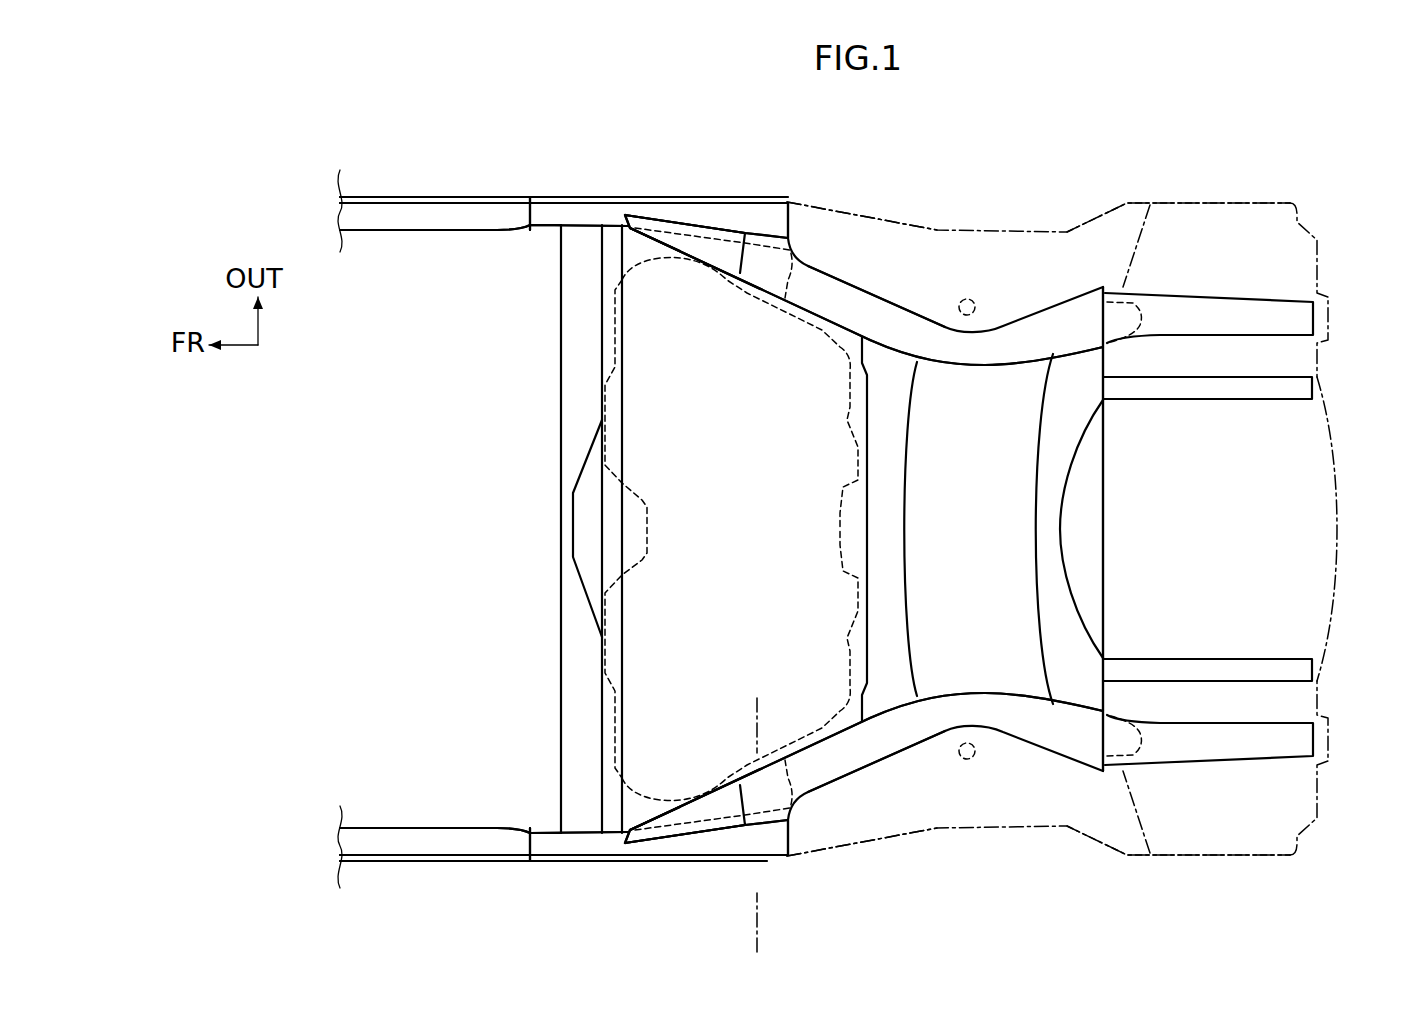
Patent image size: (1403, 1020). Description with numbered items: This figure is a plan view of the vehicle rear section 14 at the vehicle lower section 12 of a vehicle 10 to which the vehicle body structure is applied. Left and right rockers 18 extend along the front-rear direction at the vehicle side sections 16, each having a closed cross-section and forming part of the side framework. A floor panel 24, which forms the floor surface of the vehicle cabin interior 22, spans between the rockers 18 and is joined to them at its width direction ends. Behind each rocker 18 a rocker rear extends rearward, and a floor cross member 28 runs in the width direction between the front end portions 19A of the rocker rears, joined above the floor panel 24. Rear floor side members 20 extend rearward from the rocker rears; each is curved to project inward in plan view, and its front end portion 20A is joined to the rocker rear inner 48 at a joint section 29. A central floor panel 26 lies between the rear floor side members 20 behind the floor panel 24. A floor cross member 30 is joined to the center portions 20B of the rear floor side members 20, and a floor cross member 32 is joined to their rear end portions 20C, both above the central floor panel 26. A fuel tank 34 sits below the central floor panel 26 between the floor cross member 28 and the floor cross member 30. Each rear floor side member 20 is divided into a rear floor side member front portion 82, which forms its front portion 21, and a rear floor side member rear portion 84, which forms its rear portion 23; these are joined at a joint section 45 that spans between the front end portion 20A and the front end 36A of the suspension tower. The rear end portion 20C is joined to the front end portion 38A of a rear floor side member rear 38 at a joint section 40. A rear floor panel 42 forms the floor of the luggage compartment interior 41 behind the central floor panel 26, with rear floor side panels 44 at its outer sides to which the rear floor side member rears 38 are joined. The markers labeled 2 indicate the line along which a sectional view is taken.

The vehicle 10 is at (1080, 164).
The vehicle lower section 12 is at (824, 187).
The vehicle rear section 14 is at (928, 221).
The vehicle side section 16 is at (480, 180).
The rocker 18 is at (443, 213).
The front end portion of rocker rear 19A is at (582, 220).
The rear floor side member 20 is at (993, 325).
The front end portion of rear floor side member 20A is at (715, 246).
The center portion of rear floor side member 20B is at (933, 346).
The rear end portion of rear floor side member 20C is at (1087, 341).
The front portion of rear floor side member 21 is at (687, 250).
The vehicle cabin interior 22 is at (501, 529).
The rear portion of rear floor side member 23 is at (873, 322).
The floor panel 24 is at (393, 232).
The central floor panel 26 is at (727, 303).
The floor cross member 28 is at (566, 468).
The joint section 29 is at (701, 222).
The floor cross member 30 is at (893, 509).
The floor cross member 32 is at (1043, 519).
The fuel tank 34 is at (640, 400).
The front end of suspension tower 36A is at (958, 302).
The rear floor side member rear 38 is at (1233, 312).
The front end portion of rear floor side member rear 38A is at (1113, 327).
The joint section 40 is at (1128, 283).
The luggage compartment interior 41 is at (1207, 529).
The rear floor panel 42 is at (1290, 490).
The rear floor side panel 44 is at (1287, 262).
The joint section 45 is at (762, 229).
The rocker rear inner 48 is at (562, 228).
The rear floor side member front portion 82 is at (652, 215).
The rear floor side member rear portion 84 is at (862, 307).
The section line 2- 2 is at (757, 698).